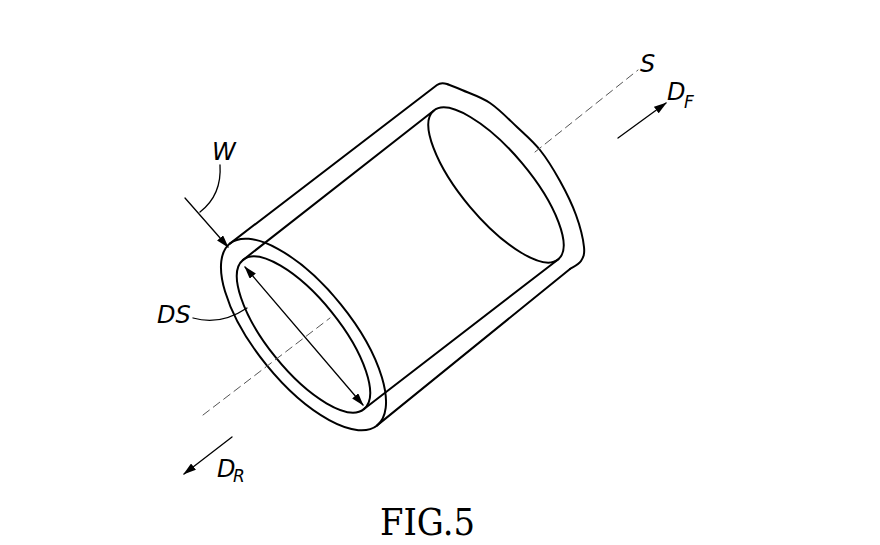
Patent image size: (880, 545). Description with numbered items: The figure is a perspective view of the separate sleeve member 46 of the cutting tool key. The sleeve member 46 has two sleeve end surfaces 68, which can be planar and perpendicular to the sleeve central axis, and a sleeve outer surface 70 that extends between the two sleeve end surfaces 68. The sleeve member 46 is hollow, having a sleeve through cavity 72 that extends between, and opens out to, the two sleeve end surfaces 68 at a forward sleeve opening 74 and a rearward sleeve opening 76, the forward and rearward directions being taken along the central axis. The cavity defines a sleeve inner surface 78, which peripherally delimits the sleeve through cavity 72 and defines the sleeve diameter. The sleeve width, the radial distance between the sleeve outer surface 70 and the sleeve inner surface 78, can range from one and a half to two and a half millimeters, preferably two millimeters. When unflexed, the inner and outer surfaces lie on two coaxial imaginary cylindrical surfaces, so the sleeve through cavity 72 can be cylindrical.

The sleeve member 46 is at (193, 128).
The sleeve end surfaces 68 is at (486, 102).
The sleeve outer surface 70 is at (513, 273).
The sleeve through cavity 72 is at (274, 333).
The forward sleeve opening 74 is at (592, 204).
The rearward sleeve opening 76 is at (297, 423).
The sleeve inner surface 78 is at (337, 393).